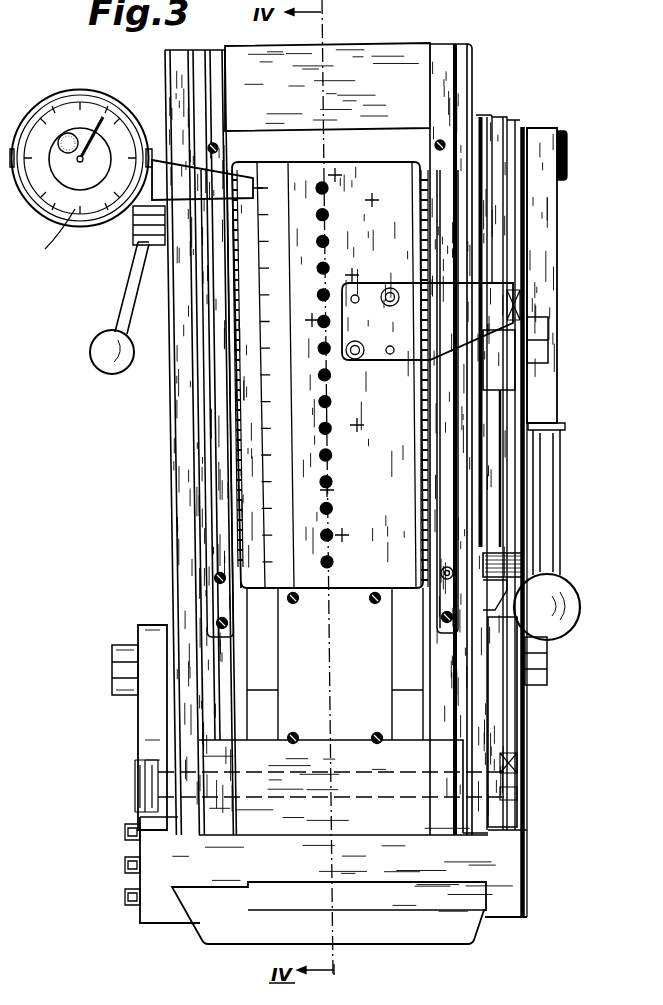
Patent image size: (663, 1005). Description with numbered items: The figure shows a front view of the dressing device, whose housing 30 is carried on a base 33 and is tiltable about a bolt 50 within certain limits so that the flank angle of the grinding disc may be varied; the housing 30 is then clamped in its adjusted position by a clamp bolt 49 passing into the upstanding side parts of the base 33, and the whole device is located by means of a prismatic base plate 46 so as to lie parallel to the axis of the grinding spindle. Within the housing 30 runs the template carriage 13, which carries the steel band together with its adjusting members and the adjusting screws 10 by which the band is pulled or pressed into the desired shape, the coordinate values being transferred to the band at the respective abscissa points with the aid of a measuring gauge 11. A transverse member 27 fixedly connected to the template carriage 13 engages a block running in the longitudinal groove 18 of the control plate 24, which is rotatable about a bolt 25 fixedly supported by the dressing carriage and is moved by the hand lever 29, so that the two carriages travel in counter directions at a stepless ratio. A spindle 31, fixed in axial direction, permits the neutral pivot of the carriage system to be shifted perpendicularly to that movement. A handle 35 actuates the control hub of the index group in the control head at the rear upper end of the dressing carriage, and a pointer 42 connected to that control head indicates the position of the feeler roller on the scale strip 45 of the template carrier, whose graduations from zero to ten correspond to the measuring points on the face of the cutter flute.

The adjusting screws 10 is at (325, 462).
The measuring gauge 11 is at (80, 230).
The template carriage 13 is at (400, 183).
The longitudinal groove 18 is at (545, 355).
The control plate 24 is at (550, 268).
The bolt 25 is at (566, 160).
The transverse member 27 is at (446, 309).
The hand lever 29 is at (545, 505).
The housing 30 is at (400, 52).
The spindle 31 is at (505, 475).
The base 33 is at (150, 722).
The handle 35 is at (150, 218).
The pointer 42 is at (145, 272).
The scale strip 45 is at (263, 390).
The prismatic base plate 46 is at (475, 925).
The clamp bolt 49 is at (535, 662).
The bolt 50 is at (510, 777).